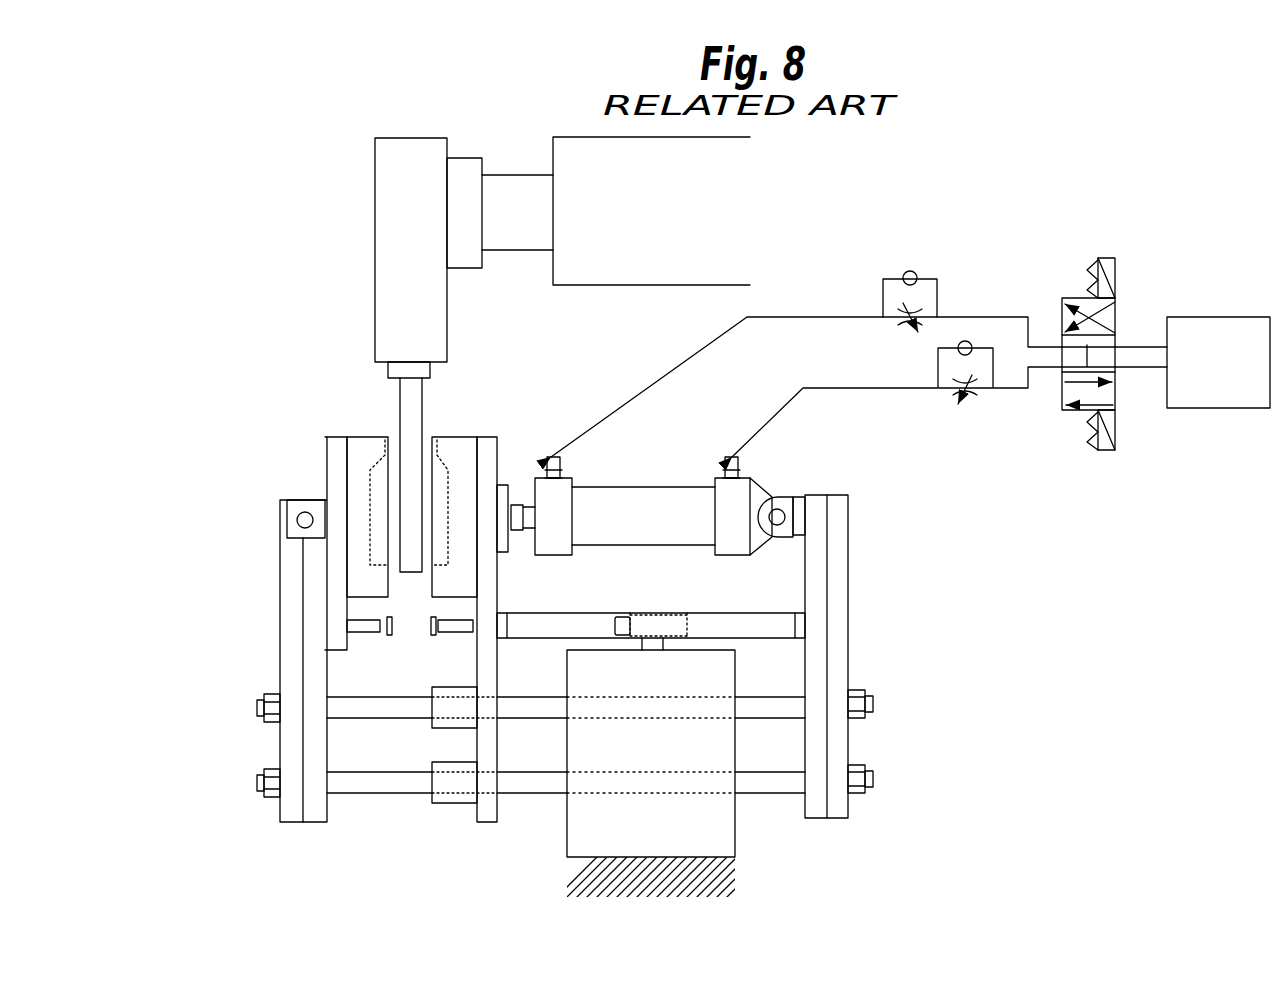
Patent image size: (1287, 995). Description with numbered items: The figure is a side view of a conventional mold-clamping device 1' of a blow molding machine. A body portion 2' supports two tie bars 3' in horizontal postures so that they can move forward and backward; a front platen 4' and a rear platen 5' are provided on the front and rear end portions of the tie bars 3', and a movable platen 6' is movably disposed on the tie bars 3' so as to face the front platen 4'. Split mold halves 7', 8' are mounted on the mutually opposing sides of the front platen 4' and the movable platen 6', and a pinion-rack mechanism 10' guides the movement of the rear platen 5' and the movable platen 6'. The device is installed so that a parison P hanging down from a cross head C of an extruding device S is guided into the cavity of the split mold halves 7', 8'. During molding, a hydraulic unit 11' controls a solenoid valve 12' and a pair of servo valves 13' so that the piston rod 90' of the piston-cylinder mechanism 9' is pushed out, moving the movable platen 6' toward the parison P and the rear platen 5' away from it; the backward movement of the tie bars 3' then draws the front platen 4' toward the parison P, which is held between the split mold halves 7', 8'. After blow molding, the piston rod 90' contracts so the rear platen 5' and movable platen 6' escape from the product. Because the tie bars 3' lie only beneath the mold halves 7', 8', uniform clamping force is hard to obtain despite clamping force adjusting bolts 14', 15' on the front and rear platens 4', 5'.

The cross head C is at (405, 258).
The extruding device S is at (727, 205).
The parison P is at (461, 441).
The mold-clamping device 1' is at (580, 348).
The body portion 2' is at (683, 776).
The tie bars 3' is at (531, 777).
The front platen 4' is at (262, 629).
The rear platen 5' is at (853, 656).
The movable platen 6' is at (513, 658).
The split mold half 7' is at (346, 508).
The split mold half 8' is at (473, 482).
The piston-cylinder mechanism 9' is at (664, 481).
The pinion-rack mechanism 10' is at (651, 606).
The hydraulic unit 11' is at (1218, 393).
The solenoid valve 12' is at (1123, 313).
The servo valves 13' is at (951, 316).
The clamping force adjusting bolt 14' is at (359, 646).
The clamping force adjusting bolt 15' is at (443, 646).
The piston rod 90' is at (552, 454).